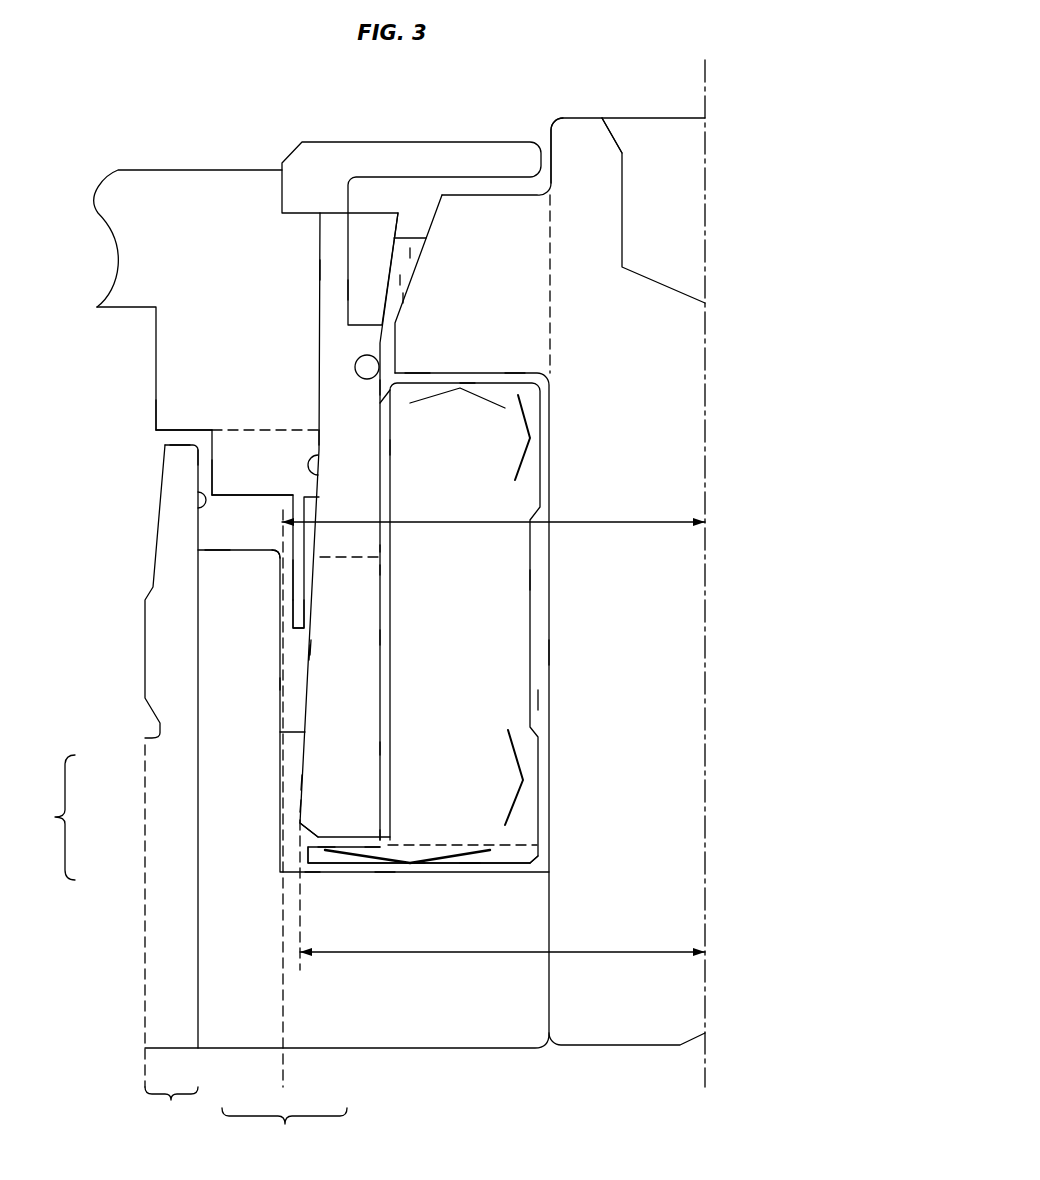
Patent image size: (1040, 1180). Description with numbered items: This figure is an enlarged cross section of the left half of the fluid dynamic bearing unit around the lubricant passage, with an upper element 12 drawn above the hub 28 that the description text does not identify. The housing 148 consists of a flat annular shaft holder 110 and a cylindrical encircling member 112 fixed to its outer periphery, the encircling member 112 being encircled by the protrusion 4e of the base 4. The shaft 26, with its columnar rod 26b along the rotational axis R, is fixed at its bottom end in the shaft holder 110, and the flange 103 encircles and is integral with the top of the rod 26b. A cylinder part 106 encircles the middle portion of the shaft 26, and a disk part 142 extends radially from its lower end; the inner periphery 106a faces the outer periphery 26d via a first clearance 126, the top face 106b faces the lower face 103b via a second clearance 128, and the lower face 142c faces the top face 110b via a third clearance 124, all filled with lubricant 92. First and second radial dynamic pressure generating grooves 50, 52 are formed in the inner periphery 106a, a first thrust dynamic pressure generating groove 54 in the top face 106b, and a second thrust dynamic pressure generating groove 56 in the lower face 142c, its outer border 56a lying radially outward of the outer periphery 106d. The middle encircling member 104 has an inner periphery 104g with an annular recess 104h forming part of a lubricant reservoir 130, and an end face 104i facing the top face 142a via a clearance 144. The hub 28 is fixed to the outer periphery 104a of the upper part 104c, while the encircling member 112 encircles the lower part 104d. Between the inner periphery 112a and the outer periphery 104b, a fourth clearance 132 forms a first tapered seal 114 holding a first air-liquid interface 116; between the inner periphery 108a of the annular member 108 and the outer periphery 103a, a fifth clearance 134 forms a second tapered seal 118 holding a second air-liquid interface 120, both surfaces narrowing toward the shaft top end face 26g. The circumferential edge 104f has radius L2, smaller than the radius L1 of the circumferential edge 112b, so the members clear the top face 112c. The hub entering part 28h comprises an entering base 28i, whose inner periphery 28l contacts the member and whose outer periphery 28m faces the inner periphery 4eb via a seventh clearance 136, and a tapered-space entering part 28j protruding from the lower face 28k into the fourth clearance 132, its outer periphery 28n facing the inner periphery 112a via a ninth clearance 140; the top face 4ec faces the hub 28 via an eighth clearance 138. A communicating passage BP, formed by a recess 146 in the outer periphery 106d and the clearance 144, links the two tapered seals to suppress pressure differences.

The base 4 is at (152, 650).
The protrusion 4e is at (171, 783).
The inner periphery of the protrusion 4eb is at (205, 503).
The top face of the base 4ec is at (190, 445).
The rail 12 is at (325, 140).
The shaft 26 is at (657, 1038).
The columnar rod 26b is at (598, 135).
The outer periphery of the middle portion of the shaft 26d is at (549, 652).
The shaft top end face 26g is at (558, 118).
The hub 28 is at (143, 178).
The hub entering part 28h is at (240, 435).
The entering base 28i is at (308, 437).
The tapered-space entering part 28j is at (306, 607).
The lower face of the entering base 28k is at (250, 507).
The inner periphery of the entering base 28l is at (318, 465).
The outer periphery of the entering base 28m is at (210, 478).
The outer periphery of the tapered-space entering part 28n is at (293, 578).
The first radial dynamic pressure generating groove 50 is at (532, 446).
The second radial dynamic pressure generating groove 52 is at (523, 793).
The first thrust dynamic pressure generating groove 54 is at (467, 393).
The second thrust dynamic pressure generating groove 56 is at (345, 867).
The outer border 56a is at (313, 875).
The lubricant 92 is at (542, 862).
The flange 103 is at (533, 300).
The outer periphery of the flange 103a is at (403, 298).
The lower face of the flange 103b is at (457, 406).
The middle encircling member 104 is at (333, 242).
The outer periphery of the upper part 104a is at (320, 270).
The outer periphery of the lower part 104b is at (293, 650).
The upper part of the middle encircling member 104c is at (380, 548).
The lower part of the middle encircling member 104d is at (380, 571).
The circumferential edge 104f is at (293, 820).
The inner periphery of the middle encircling member 104g is at (380, 447).
The annular recess 104h is at (380, 385).
The end face of the middle encircling member 104i is at (365, 843).
The cylinder part 106 is at (510, 615).
The inner periphery of the cylinder part 106a is at (532, 580).
The top face of the cylinder part 106b is at (513, 382).
The outer periphery of the cylinder part 106d is at (375, 640).
The annular member 108 is at (372, 228).
The inner periphery of the annular member 108a is at (386, 291).
The shaft holder 110 is at (323, 1040).
The top face of the shaft holder 110b is at (383, 875).
The encircling member 112 is at (233, 1040).
The inner periphery of the encircling member 112a is at (282, 683).
The circumferential edge 112b is at (280, 550).
The top face of the encircling member 112c is at (207, 550).
The first tapered seal 114 is at (297, 780).
The first air-liquid interface 116 is at (298, 732).
The second tapered seal 118 is at (410, 253).
The second air-liquid interface 120 is at (410, 240).
The third clearance 124 is at (417, 867).
The first clearance 126 is at (538, 700).
The second clearance 128 is at (418, 385).
The lubricant reservoir 130 is at (362, 354).
The fourth clearance 132 is at (283, 805).
The fifth clearance 134 is at (400, 280).
The seventh clearance 136 is at (200, 455).
The eighth clearance 138 is at (172, 437).
The ninth clearance 140 is at (310, 647).
The disk part 142 is at (308, 847).
The top face of the disk part 142a is at (370, 845).
The lower face of the disk part 142c is at (470, 870).
The clearance 144 is at (327, 840).
The recess 146 is at (388, 748).
The housing 148 is at (284, 1131).
The communicating passage BP is at (49, 817).
The radius of the circumferential edge 112b L1 is at (620, 522).
The radius of the circumferential edge 104f L2 is at (623, 950).
The rotational axis R is at (707, 559).